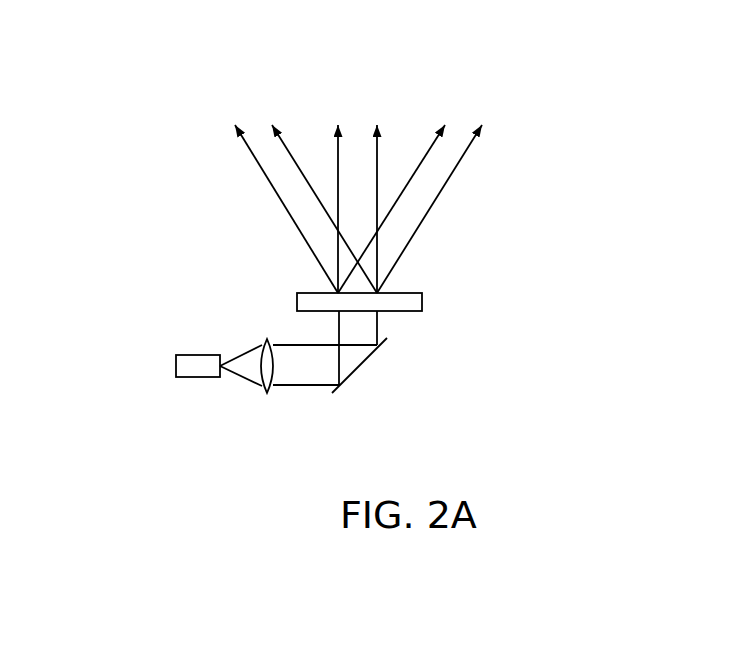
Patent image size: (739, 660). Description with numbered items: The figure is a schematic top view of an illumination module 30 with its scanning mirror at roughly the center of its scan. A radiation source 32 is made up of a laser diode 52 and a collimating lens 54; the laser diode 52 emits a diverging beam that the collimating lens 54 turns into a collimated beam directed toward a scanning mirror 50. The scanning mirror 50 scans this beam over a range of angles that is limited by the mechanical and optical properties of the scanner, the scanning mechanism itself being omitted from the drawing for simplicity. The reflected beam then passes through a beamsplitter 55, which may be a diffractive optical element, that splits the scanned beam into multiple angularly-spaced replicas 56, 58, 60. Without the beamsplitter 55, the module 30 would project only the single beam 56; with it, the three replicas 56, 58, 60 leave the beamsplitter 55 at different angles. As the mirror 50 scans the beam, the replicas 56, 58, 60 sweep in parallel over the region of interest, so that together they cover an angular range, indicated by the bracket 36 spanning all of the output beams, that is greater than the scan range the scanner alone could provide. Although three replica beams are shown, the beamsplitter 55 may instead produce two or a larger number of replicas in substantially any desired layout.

The illumination module 30 is at (78, 148).
The radiation source 32 is at (165, 418).
The output light 36 is at (140, 48).
The scanning mirror 50 is at (362, 365).
The laser diode 52 is at (176, 362).
The collimating lens 54 is at (266, 339).
The beamsplitter 55 is at (422, 294).
The replica 56 is at (327, 125).
The replica 58 is at (285, 125).
The replica 60 is at (492, 125).